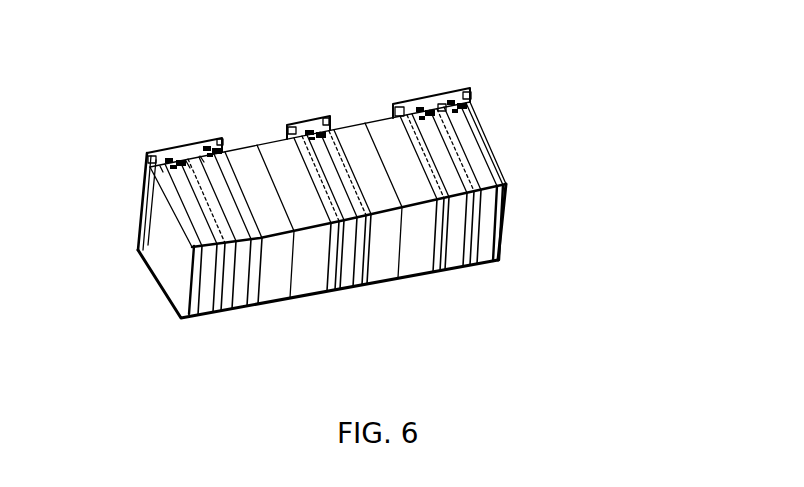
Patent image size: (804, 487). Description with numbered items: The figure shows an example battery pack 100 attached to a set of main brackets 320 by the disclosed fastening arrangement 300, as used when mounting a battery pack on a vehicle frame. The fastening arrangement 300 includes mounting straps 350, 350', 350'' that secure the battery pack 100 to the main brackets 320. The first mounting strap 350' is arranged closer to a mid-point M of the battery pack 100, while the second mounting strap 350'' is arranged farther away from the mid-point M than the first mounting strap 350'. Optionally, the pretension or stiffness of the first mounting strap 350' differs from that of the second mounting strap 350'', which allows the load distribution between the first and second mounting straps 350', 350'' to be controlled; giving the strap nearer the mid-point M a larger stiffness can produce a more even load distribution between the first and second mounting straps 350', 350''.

The fastening arrangement 300 is at (108, 84).
The battery pack 100 is at (163, 232).
The main brackets 320 is at (202, 147).
The mid-point M is at (298, 108).
The first fixing strap 350 is at (244, 270).
The first mounting strap 350' is at (362, 256).
The second mounting strap 350'' is at (461, 230).